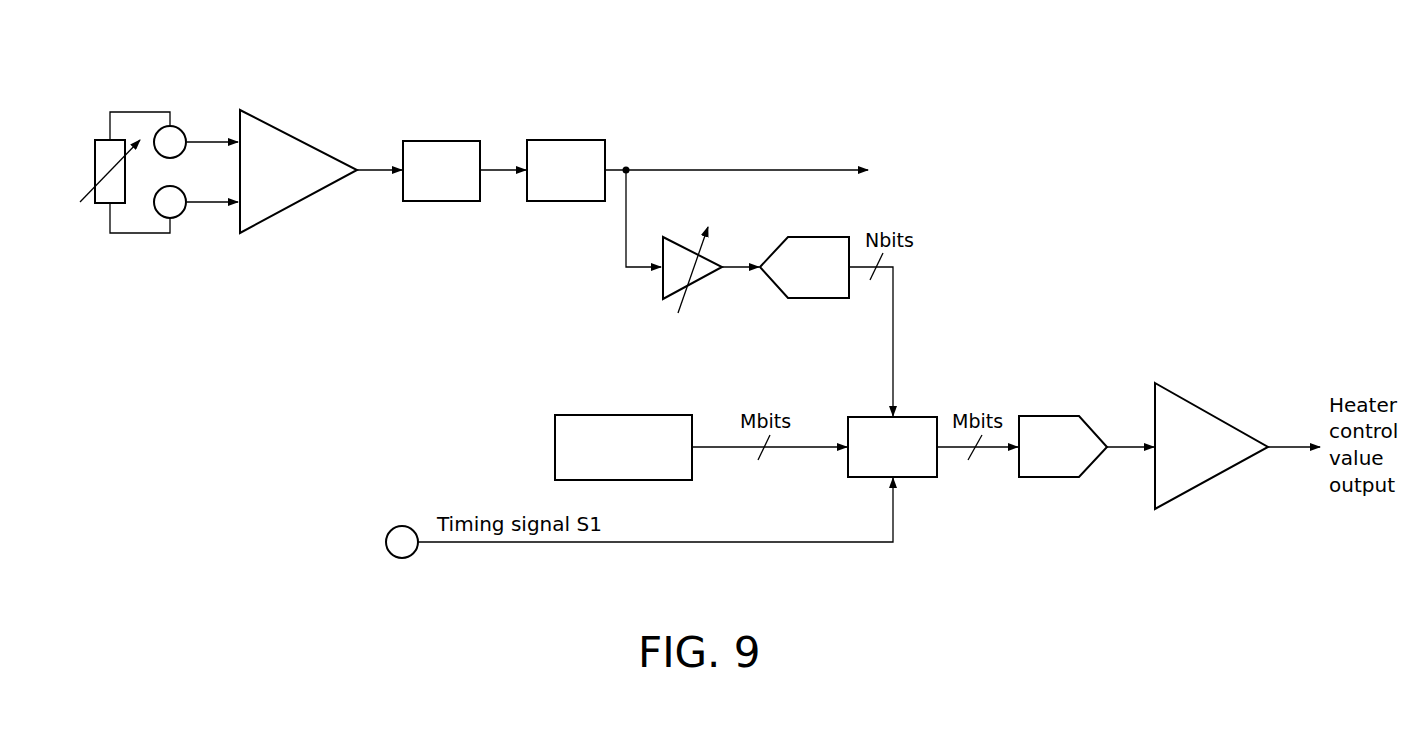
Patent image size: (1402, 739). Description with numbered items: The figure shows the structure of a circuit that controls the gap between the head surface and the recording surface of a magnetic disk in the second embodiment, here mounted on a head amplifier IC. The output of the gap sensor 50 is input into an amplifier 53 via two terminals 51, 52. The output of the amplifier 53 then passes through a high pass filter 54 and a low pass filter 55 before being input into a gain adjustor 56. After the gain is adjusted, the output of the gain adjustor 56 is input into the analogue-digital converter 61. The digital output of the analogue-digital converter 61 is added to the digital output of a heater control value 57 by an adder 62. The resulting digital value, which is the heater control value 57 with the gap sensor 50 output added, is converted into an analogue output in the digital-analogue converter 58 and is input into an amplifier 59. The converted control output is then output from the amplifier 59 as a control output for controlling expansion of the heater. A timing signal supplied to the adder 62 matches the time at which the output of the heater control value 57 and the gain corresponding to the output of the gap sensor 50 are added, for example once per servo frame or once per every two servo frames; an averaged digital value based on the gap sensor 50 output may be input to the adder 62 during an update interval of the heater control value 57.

The gap sensor 50 is at (100, 140).
The terminal 51 is at (178, 128).
The terminal 52 is at (178, 215).
The amplifier 53 is at (295, 138).
The high pass filter 54 is at (445, 140).
The low pass filter 55 is at (568, 140).
The gain adjustor 56 is at (675, 243).
The analogue-digital converter 61 is at (815, 237).
The heater control value 57 is at (622, 415).
The adder 62 is at (917, 417).
The digital-analogue converter 58 is at (1057, 416).
The amplifier 59 is at (1212, 415).